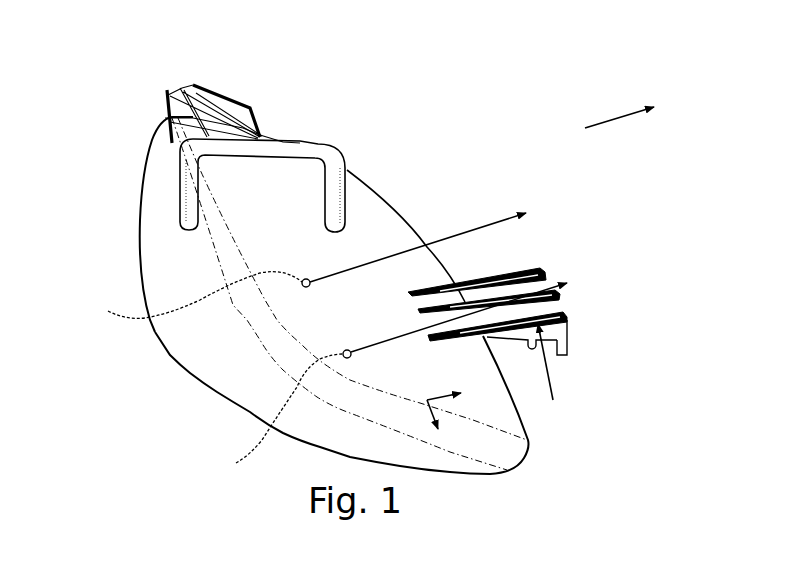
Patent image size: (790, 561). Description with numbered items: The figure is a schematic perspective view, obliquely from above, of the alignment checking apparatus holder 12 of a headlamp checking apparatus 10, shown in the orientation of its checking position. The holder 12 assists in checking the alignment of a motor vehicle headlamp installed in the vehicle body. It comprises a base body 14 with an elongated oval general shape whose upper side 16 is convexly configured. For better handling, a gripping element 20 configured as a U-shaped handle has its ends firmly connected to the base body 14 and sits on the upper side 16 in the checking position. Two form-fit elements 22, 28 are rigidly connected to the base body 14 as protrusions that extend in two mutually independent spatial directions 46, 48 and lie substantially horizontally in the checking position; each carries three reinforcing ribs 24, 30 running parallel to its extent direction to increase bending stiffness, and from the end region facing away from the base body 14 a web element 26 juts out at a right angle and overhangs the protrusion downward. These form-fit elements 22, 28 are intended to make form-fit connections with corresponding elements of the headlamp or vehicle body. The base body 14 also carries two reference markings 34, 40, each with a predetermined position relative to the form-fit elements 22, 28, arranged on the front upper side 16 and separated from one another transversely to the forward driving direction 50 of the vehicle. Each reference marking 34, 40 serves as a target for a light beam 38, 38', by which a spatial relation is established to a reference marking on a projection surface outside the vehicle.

The headlamp checking apparatus 10 is at (131, 91).
The alignment checking apparatus holder 12 is at (132, 185).
The base body 14 is at (208, 337).
The upper side 16 is at (363, 211).
The gripping element 20 is at (307, 138).
The form-fit element 22 is at (557, 342).
The reinforcing ribs 24 is at (512, 266).
The web element 26 is at (558, 334).
The form-fit element 28 is at (208, 103).
The reinforcing ribs 30 is at (241, 102).
The reference marking 34 is at (388, 379).
The light beam 38 is at (418, 213).
The light beam 38' is at (556, 376).
The reference marking 40 is at (198, 298).
The spatial direction 46 is at (448, 422).
The spatial direction 48 is at (458, 396).
The forward driving direction 50 is at (617, 117).